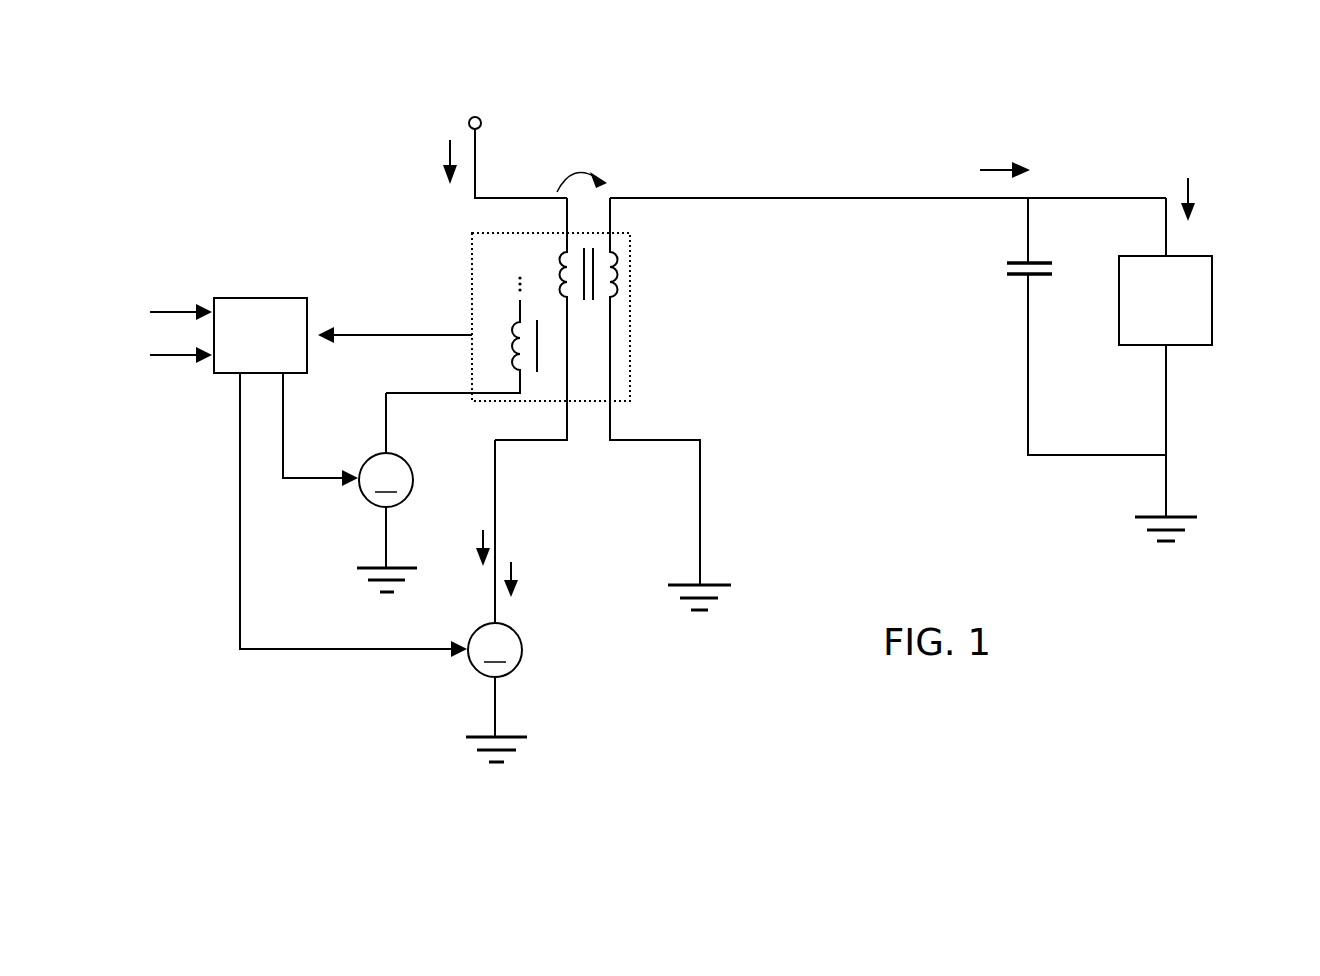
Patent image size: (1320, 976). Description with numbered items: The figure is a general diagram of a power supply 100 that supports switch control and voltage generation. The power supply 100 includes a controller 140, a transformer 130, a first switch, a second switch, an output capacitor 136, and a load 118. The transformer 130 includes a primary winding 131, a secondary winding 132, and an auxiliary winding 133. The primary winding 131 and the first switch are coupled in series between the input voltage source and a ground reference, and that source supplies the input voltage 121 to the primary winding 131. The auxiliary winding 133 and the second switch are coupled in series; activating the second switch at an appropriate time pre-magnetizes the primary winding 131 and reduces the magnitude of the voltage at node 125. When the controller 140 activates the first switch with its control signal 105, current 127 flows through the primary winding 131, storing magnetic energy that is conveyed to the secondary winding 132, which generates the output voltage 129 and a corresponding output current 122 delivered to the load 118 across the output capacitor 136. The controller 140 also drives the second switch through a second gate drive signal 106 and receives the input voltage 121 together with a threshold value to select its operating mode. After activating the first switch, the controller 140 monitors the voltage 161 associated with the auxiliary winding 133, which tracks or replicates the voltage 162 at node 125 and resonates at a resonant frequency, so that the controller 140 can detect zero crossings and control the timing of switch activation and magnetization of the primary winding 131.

The power supply 100 is at (762, 88).
The control signal 105 is at (355, 655).
The gate drive signal GD1 line 106 is at (320, 485).
The load 118 is at (1148, 324).
The input voltage 121 is at (442, 151).
The output current 122 is at (998, 163).
The node 125 is at (545, 447).
The current 127 is at (478, 540).
The output voltage 129 is at (1195, 198).
The transformer 130 is at (632, 338).
The primary winding 131 is at (560, 272).
The secondary winding 132 is at (642, 268).
The auxiliary winding 133 is at (508, 322).
The output capacitor 136 is at (1018, 282).
The controller 140 is at (243, 360).
The voltage 161 is at (376, 332).
The voltage 162 is at (523, 568).